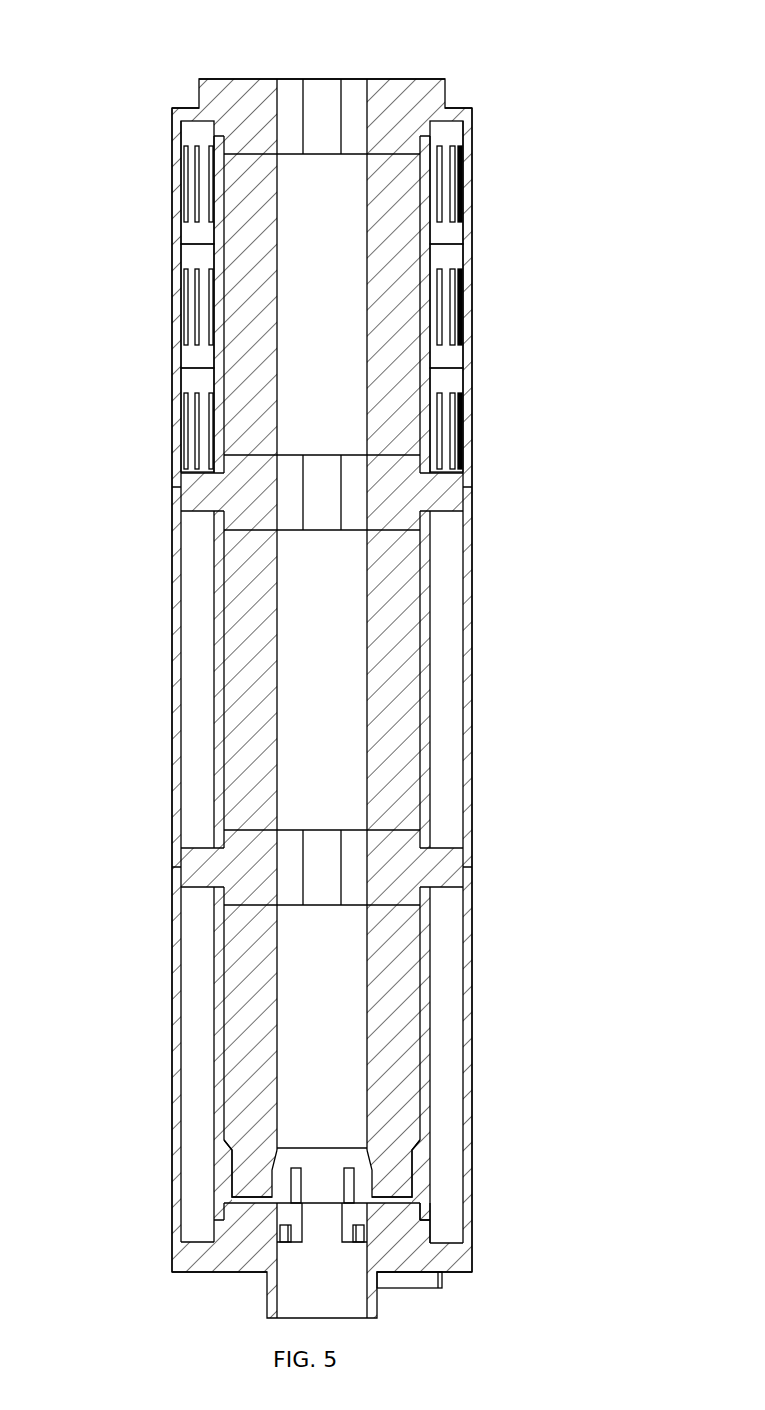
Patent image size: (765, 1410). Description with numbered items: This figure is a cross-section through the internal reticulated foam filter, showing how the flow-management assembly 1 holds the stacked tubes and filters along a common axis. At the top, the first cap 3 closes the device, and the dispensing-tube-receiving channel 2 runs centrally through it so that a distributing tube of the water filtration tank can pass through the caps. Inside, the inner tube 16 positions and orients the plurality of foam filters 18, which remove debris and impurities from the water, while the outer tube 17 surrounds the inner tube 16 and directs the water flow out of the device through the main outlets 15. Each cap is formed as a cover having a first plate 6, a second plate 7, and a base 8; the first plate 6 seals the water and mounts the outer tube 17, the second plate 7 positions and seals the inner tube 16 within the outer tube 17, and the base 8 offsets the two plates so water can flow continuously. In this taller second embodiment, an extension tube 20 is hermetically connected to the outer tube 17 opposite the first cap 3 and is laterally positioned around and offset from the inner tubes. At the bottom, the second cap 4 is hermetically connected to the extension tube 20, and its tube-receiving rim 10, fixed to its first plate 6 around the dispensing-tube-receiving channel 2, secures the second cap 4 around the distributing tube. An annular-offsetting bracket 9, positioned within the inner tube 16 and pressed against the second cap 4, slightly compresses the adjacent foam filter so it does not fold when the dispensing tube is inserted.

The flow-management assembly 1 is at (178, 94).
The dispensing-tube-receiving channel 2 is at (323, 119).
The first cap 3 is at (510, 115).
The second cap 4 is at (477, 1277).
The first plate 6 is at (468, 118).
The second plate 7 is at (410, 1207).
The base 8 is at (425, 1233).
The annular-offsetting bracket 9 is at (228, 1191).
The tube-receiving rim 10 is at (377, 1305).
The main outlets 15 is at (196, 412).
The inner tube 16 is at (217, 725).
The outer tube 17 is at (177, 254).
The foam filters 18 is at (372, 618).
The extension tube 20 is at (175, 603).